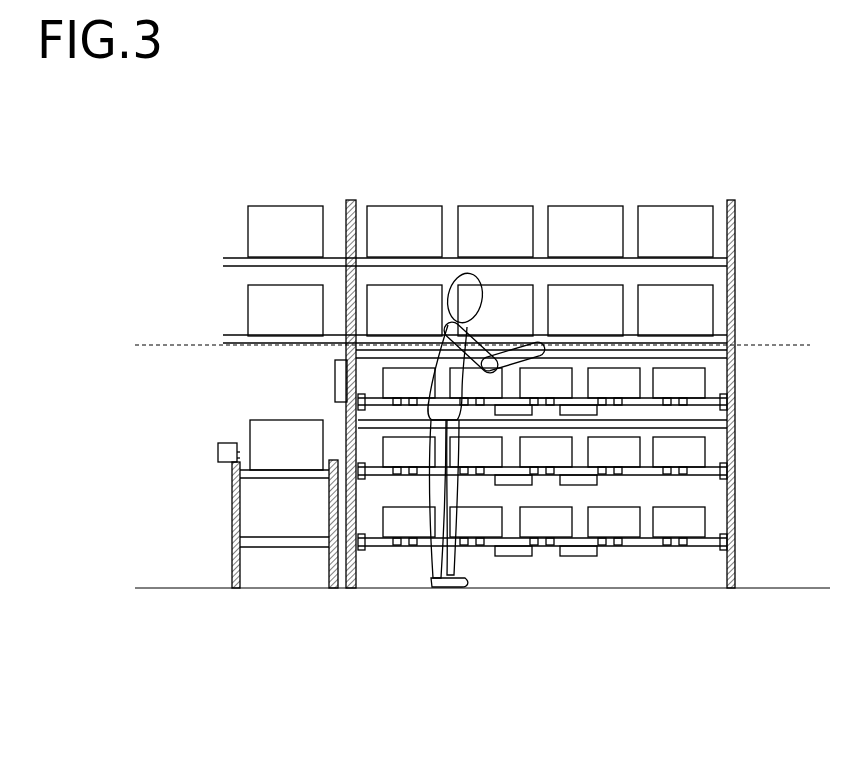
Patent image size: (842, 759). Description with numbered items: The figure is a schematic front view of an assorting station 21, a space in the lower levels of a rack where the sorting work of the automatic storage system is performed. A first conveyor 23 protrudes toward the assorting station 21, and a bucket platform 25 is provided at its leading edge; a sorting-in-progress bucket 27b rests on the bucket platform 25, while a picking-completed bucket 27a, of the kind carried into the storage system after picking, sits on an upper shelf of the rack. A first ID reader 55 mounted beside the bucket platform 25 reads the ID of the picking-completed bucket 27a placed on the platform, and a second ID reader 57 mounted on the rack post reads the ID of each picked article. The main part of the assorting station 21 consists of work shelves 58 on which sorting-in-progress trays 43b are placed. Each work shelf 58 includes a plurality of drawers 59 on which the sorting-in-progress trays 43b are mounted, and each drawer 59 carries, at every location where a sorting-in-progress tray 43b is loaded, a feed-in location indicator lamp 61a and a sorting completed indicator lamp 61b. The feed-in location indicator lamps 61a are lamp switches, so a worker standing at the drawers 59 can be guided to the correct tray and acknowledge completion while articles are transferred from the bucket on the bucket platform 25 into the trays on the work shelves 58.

The assorting station 21 is at (343, 612).
The first conveyor 23 is at (216, 545).
The bucket platform 25 is at (274, 472).
The picking-completed bucket 27a is at (676, 218).
The sorting-in-progress bucket 27b is at (268, 432).
The sorting-in-progress tray 43b is at (690, 380).
The first ID reader 55 is at (218, 452).
The second ID reader 57 is at (335, 380).
The work shelf 58 is at (568, 358).
The drawer 59 is at (660, 357).
The feed-in location indicator lamp 61a is at (473, 548).
The sorting completed indicator lamp 61b is at (487, 550).